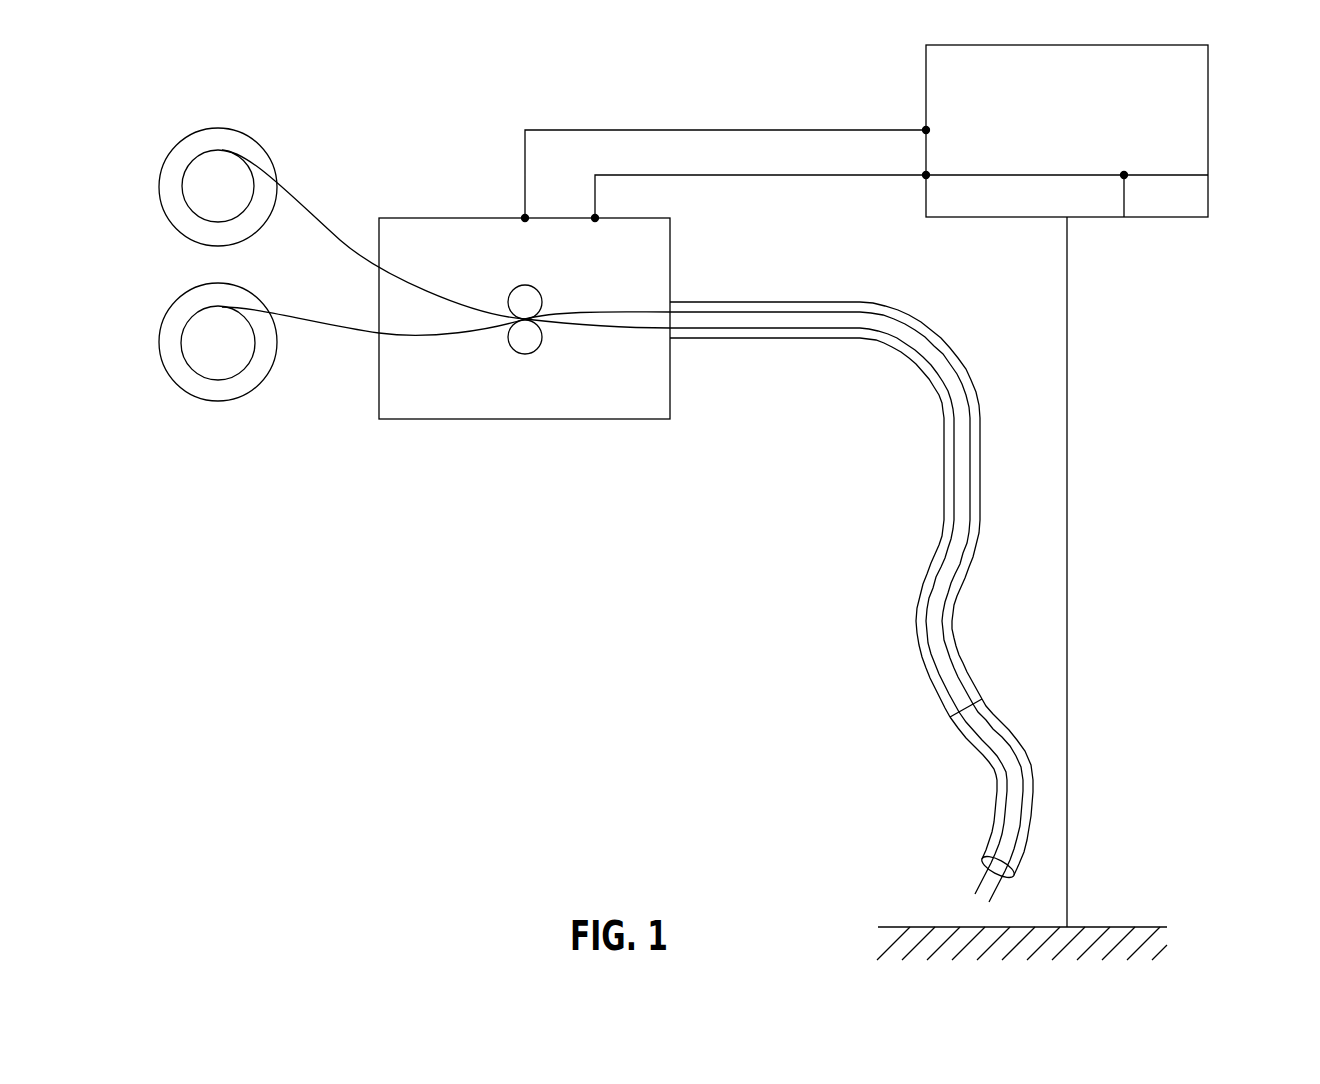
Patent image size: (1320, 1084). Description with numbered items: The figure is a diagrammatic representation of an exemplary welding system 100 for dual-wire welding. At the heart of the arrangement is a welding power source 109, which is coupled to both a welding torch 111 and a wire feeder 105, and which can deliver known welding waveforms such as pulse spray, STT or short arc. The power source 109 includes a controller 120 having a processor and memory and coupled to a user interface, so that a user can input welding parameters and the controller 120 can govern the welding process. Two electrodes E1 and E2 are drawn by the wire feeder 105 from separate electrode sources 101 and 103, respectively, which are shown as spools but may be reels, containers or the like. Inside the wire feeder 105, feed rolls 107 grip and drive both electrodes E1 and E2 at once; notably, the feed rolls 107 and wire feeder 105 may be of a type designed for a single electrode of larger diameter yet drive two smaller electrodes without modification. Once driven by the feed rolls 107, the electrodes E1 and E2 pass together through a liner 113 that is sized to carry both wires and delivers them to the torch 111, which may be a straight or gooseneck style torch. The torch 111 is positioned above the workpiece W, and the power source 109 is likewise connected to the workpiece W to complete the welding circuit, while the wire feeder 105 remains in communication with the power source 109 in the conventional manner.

The welding system 100 is at (634, 76).
The electrode source 101 is at (223, 128).
The electrode source 103 is at (173, 306).
The electrode E1 is at (327, 236).
The electrode E2 is at (320, 333).
The wire feeder 105 is at (438, 419).
The feed rolls 107 is at (538, 345).
The welding power source 109 is at (1208, 108).
The controller 120 is at (1182, 198).
The liner 113 is at (923, 373).
The welding torch 111 is at (996, 786).
The workpiece W is at (1118, 927).